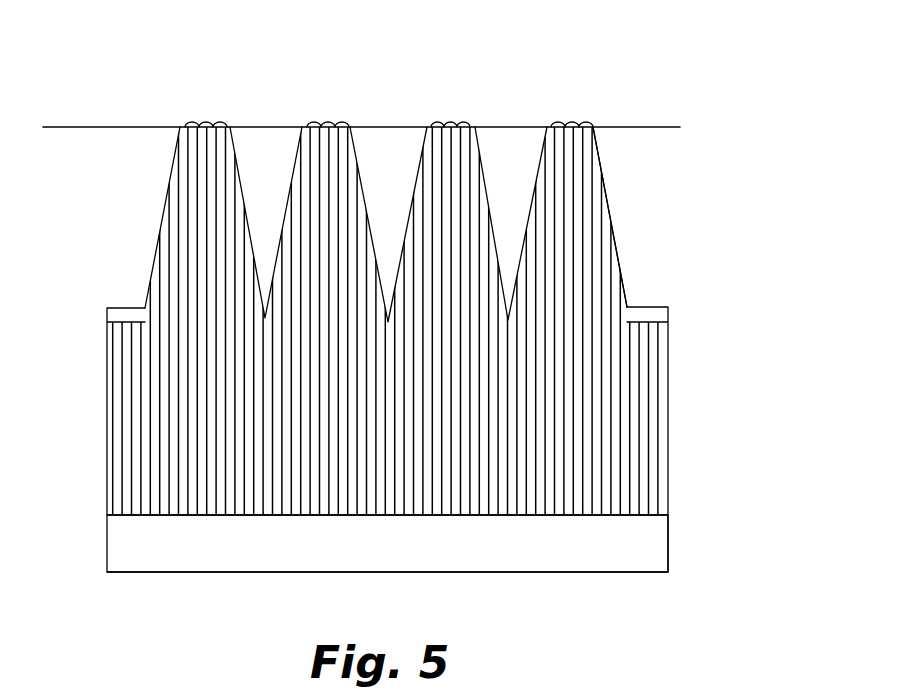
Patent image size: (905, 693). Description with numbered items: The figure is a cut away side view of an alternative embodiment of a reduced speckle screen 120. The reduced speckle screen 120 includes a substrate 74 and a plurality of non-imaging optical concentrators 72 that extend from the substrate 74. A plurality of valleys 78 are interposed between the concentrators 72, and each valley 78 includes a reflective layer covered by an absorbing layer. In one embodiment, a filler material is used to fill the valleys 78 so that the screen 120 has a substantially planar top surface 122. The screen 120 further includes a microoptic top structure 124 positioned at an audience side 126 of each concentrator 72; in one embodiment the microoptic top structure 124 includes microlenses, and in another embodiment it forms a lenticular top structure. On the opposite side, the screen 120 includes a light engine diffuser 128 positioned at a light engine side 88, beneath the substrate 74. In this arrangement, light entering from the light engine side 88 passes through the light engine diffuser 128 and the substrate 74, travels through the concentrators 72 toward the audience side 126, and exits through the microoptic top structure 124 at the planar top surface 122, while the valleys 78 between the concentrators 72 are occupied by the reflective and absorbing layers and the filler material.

The non-imaging optical concentrators 72 is at (218, 281).
The substrate 74 is at (206, 481).
The valleys 78 is at (130, 263).
The light engine side 88 is at (150, 588).
The reduced speckle screen 120 is at (668, 540).
The substantially planar top surface 122 is at (111, 127).
The microoptic top structure 124 is at (196, 122).
The audience side 126 is at (611, 222).
The light engine diffuser 128 is at (230, 572).